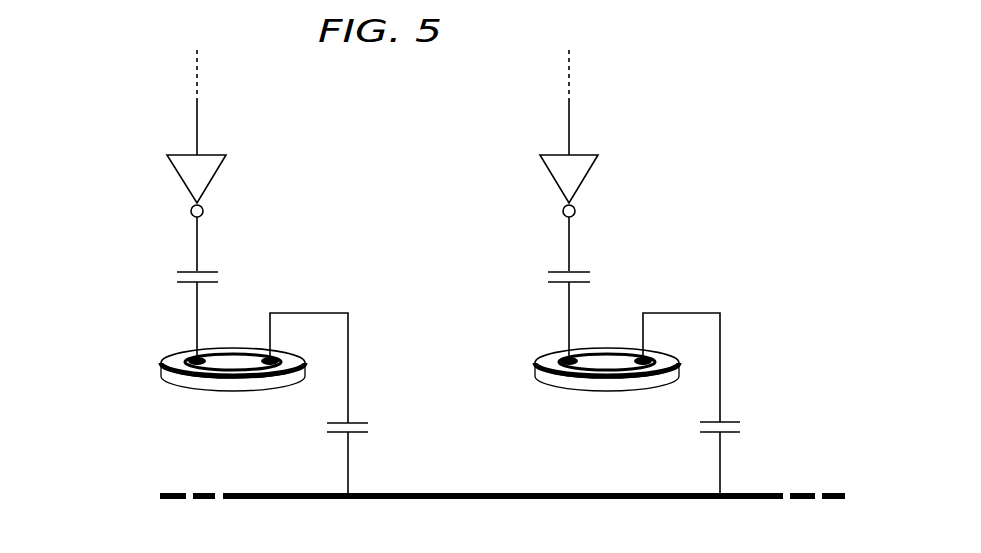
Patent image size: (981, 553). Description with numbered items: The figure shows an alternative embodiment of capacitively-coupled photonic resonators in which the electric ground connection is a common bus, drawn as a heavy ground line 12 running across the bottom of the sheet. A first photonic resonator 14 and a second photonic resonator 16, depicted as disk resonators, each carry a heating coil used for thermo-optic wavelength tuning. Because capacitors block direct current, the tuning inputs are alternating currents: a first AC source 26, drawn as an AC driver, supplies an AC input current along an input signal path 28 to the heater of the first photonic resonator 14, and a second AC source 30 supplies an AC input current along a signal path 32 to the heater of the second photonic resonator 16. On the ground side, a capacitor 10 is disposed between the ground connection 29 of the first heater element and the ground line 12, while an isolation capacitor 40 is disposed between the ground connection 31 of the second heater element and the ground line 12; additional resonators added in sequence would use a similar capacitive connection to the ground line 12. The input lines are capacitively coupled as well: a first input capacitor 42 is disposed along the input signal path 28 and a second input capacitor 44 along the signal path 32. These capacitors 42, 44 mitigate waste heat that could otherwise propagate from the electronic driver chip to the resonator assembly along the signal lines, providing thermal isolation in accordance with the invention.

The capacitor 10 is at (327, 426).
The ground line 12 is at (419, 499).
The first photonic resonator 14 is at (164, 367).
The second photonic resonator 16 is at (538, 367).
The first AC source 26 is at (187, 172).
The input signal path 28 is at (197, 239).
The ground connection of heater element 29 is at (300, 314).
The AC source 30 is at (559, 172).
The ground connection of heater element 31 is at (672, 314).
The signal path 32 is at (569, 239).
The isolation capacitor 40 is at (700, 426).
The first input capacitor 42 is at (176, 276).
The second input capacitor 44 is at (548, 276).